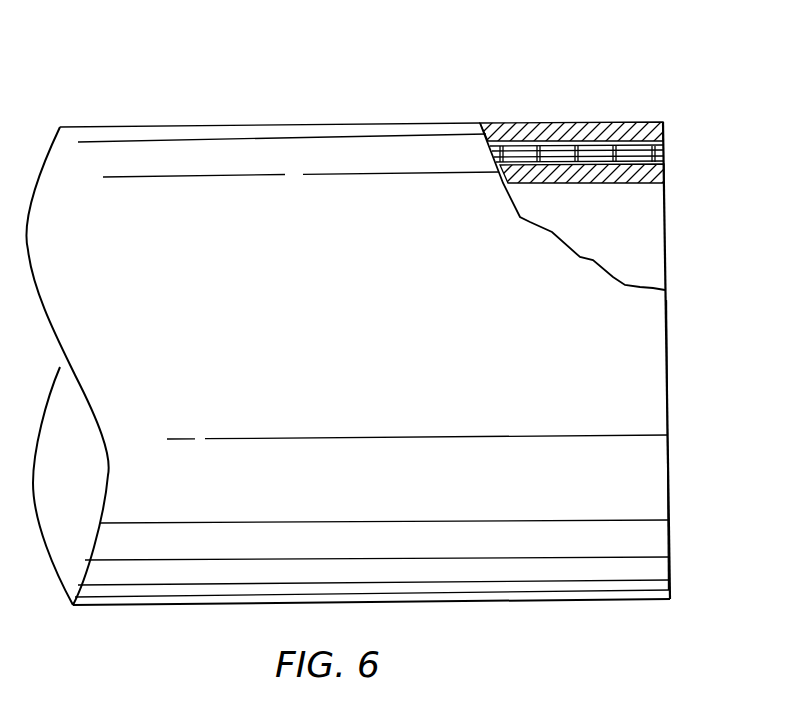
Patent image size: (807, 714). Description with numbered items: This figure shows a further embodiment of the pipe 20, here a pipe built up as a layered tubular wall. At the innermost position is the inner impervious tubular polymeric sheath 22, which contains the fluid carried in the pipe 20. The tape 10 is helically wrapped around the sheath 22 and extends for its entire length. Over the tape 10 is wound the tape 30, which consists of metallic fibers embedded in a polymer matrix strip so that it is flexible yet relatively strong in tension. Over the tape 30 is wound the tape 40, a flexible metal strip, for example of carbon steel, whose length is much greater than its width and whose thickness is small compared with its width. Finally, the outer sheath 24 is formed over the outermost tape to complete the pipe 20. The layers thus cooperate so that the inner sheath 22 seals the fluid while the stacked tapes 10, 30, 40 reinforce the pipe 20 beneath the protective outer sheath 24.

The pipe 20 is at (470, 16).
The outer sheath 24 is at (597, 122).
The inner impervious tubular polymeric sheath 22 is at (600, 185).
The tape 40 is at (662, 142).
The tape 30 is at (665, 150).
The tape 10 is at (666, 162).